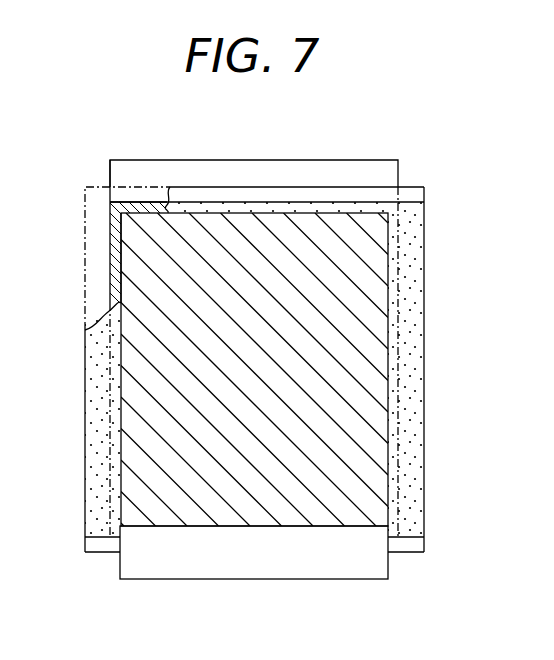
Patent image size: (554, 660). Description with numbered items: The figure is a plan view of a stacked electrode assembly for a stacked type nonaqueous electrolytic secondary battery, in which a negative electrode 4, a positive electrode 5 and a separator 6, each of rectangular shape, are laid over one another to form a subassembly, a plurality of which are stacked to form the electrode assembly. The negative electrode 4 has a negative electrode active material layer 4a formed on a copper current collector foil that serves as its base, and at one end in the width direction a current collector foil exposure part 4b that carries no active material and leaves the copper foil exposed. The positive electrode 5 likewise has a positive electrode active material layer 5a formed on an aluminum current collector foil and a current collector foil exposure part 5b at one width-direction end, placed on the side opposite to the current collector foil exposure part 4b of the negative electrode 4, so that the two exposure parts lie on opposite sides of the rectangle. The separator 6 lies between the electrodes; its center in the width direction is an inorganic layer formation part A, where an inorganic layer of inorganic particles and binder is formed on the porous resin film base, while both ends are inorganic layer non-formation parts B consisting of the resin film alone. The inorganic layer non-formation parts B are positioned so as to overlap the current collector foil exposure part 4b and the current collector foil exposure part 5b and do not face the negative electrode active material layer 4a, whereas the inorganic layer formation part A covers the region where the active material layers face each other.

The negative electrode 4 is at (126, 162).
The negative electrode active material layer 4a is at (118, 248).
The current collector foil exposure part 4b is at (117, 172).
The separator 6 is at (415, 186).
The inorganic layer formation part A is at (423, 310).
The inorganic layer non-formation part B is at (422, 195).
The positive electrode 5 is at (303, 420).
The positive electrode active material layer 5a is at (367, 402).
The current collector foil exposure part 5b is at (377, 564).